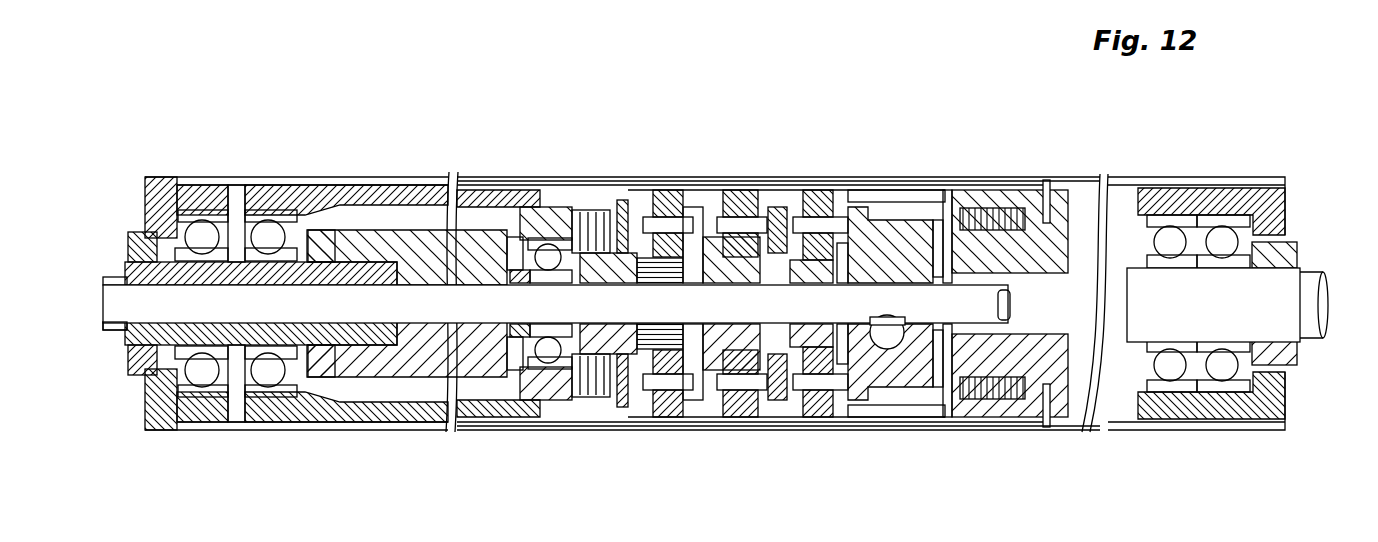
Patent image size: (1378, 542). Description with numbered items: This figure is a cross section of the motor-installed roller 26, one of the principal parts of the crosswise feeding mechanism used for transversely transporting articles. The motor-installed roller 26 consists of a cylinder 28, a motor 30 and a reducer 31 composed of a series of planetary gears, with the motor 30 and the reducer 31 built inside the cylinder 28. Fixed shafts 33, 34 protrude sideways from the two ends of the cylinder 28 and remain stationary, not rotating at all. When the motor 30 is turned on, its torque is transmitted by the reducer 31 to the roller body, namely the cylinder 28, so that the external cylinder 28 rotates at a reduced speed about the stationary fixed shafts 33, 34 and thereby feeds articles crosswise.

The motor-installed roller 26 is at (1015, 168).
The cylinder 28 is at (609, 176).
The motor 30 is at (488, 242).
The reducer 31 is at (822, 412).
The fixed shaft 33 is at (123, 297).
The fixed shaft 34 is at (1302, 316).